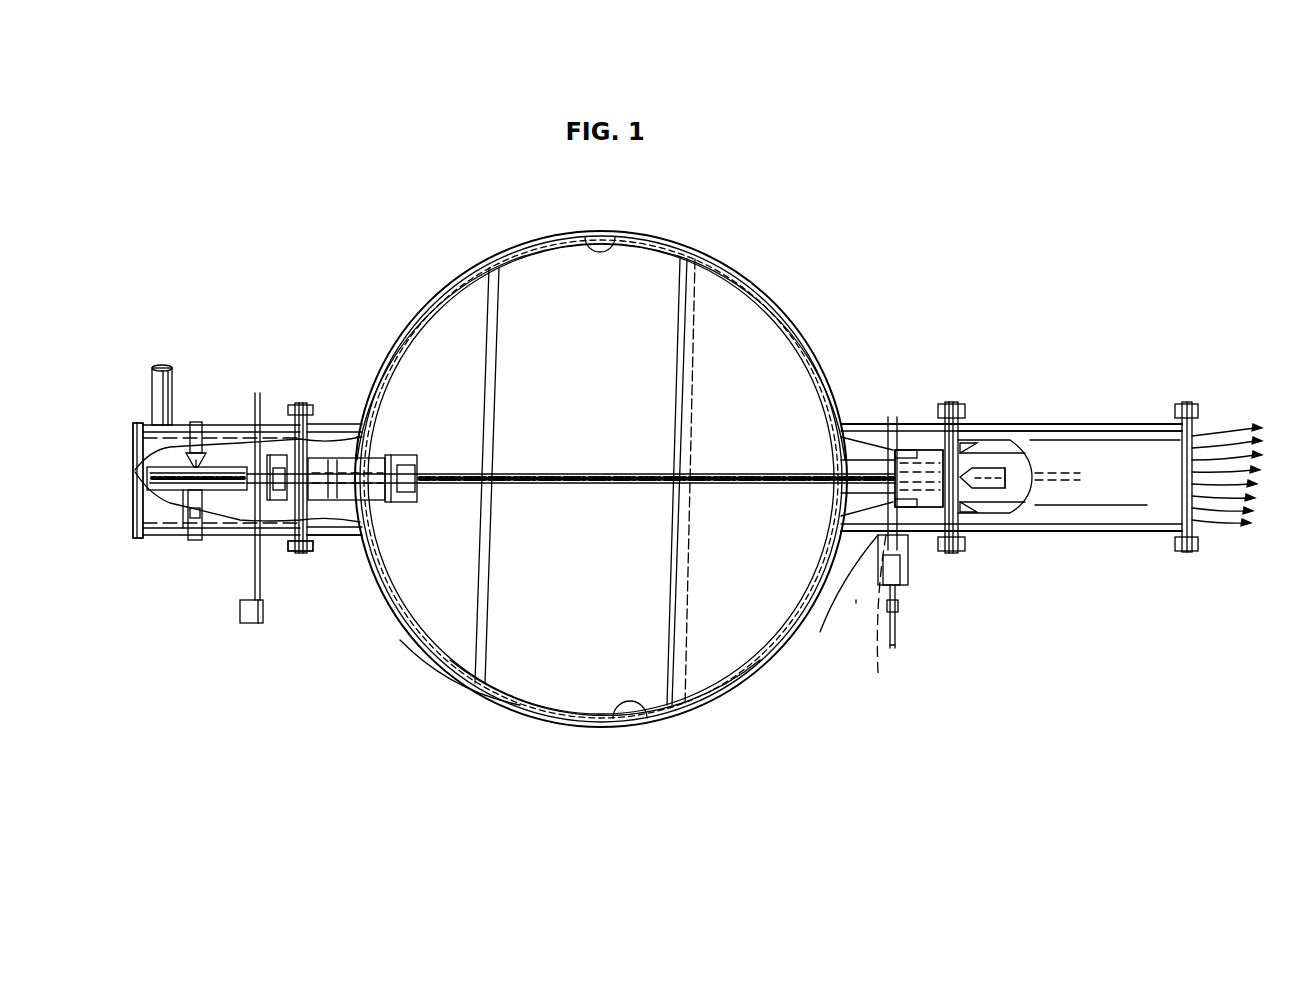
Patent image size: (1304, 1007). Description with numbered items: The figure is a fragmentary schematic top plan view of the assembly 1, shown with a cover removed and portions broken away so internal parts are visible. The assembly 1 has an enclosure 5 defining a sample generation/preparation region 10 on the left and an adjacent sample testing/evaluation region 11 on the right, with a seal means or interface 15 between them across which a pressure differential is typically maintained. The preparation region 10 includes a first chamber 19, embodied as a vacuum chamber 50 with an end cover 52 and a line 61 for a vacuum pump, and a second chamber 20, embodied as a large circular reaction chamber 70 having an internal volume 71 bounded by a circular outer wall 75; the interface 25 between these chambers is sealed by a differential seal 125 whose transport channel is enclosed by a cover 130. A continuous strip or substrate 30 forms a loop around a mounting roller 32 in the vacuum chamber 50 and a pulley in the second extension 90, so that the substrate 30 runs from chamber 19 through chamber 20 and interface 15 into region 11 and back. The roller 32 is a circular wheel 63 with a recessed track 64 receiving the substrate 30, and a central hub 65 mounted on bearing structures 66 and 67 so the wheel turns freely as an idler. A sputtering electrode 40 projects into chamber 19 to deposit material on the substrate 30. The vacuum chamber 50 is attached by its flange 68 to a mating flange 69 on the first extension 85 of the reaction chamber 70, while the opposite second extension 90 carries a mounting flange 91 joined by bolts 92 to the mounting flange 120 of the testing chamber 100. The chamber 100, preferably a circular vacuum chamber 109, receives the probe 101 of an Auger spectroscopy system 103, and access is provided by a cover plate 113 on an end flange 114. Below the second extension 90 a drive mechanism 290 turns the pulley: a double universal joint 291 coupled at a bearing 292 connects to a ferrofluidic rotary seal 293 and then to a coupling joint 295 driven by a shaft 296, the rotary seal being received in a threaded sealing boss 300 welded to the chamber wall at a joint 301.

The assembly 1 is at (763, 253).
The enclosure 5 is at (542, 237).
The sample generation/preparation region 10 is at (790, 289).
The sample testing/evaluation region 11 is at (1112, 412).
The interface 15 is at (928, 552).
The first chamber 19 is at (235, 410).
The second chamber 20 is at (615, 237).
The interface 25 is at (336, 414).
The continuous strip or substrate 30 is at (258, 488).
The mounting roller 32 is at (182, 493).
The sputtering electrode 40 is at (257, 583).
The vacuum chamber 50 is at (152, 540).
The end cover 52 is at (135, 440).
The line 61 is at (152, 405).
The circular wheel 63 is at (192, 460).
The recessed track 64 is at (147, 478).
The central hub 65 is at (201, 495).
The bearing structure 66 is at (198, 460).
The bearing structure 67 is at (199, 519).
The flange 68 is at (296, 408).
The mating flange 69 is at (313, 548).
The circular reaction chamber 70 is at (580, 727).
The internal volume 71 is at (643, 717).
The circular outer wall 75 is at (493, 707).
The first extension 85 is at (351, 545).
The second extension 90 is at (867, 424).
The mounting flange 91 is at (940, 418).
The bolts 92 is at (958, 405).
The chamber 100 is at (1020, 433).
The probe 101 is at (1000, 490).
The Auger spectroscopy system 103 is at (1002, 464).
The circular vacuum chamber 109 is at (1135, 423).
The cover plate 113 is at (1198, 430).
The end flange 114 is at (1178, 538).
The mounting flange 120 is at (963, 424).
The differential seal 125 is at (375, 453).
The cover 130 is at (368, 488).
The drive mechanism 290 is at (858, 632).
The double universal joint 291 is at (855, 615).
The bearing 292 is at (878, 488).
The ferrofluidic rotary seal 293 is at (875, 616).
The coupling joint 295 is at (898, 602).
The shaft 296 is at (897, 630).
The threaded sealing boss 300 is at (912, 565).
The joint 301 is at (837, 597).